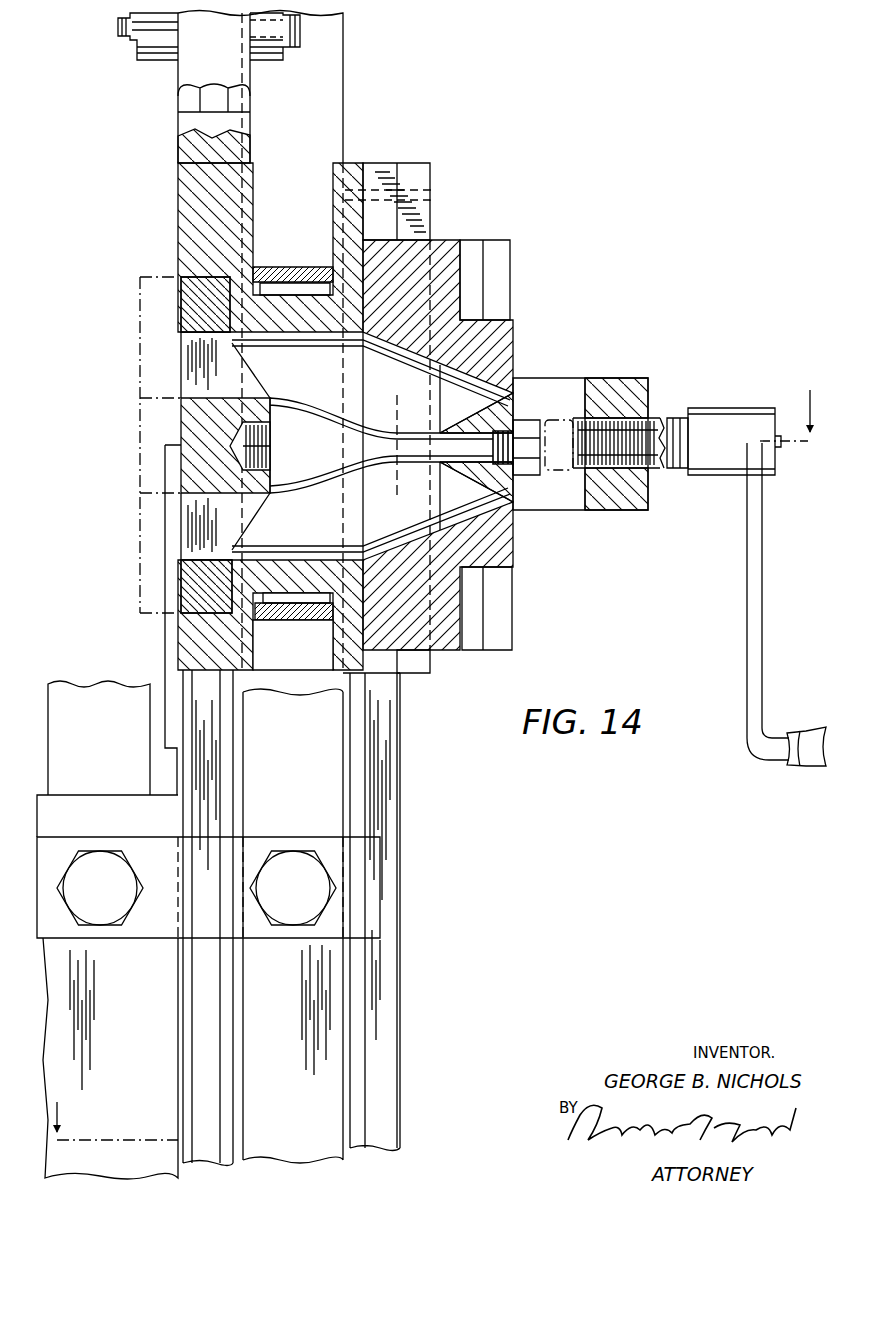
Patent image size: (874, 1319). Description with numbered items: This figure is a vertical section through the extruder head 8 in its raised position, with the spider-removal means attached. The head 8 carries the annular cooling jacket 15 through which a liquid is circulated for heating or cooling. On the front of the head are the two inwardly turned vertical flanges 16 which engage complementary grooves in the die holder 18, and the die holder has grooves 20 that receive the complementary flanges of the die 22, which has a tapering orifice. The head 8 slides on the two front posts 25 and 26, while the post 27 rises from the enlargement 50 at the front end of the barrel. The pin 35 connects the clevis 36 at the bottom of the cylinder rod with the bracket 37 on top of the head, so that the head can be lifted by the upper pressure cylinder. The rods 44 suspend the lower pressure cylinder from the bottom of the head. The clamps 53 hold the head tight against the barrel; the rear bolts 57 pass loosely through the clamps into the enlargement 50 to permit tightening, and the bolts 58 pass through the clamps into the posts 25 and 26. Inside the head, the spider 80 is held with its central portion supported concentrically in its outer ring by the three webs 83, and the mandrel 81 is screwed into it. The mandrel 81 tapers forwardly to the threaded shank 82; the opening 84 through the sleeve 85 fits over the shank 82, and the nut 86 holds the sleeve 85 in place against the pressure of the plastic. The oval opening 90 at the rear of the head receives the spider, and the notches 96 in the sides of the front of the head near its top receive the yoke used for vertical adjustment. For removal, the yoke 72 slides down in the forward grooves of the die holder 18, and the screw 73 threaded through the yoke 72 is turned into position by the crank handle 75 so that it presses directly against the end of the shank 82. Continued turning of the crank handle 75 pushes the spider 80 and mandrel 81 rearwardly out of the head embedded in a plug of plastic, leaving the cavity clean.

The extruder head 8 is at (372, 151).
The annular cooling jacket 15 is at (315, 625).
The vertical flanges 16 is at (420, 172).
The die holder 18 is at (448, 248).
The grooves 20 is at (472, 286).
The die 22 is at (517, 560).
The post 25 is at (350, 772).
The post 26 is at (325, 77).
The post 27 is at (100, 690).
The pin 35 is at (300, 30).
The clevis 36 is at (145, 58).
The bracket 37 is at (180, 118).
The rods 44 is at (185, 690).
The enlargement 50 is at (118, 806).
The clamps 53 is at (380, 932).
The rear bolts 57 is at (105, 916).
The bolts 58 is at (292, 856).
The yoke 72 is at (632, 510).
The screw 73 is at (575, 418).
The crank handle 75 is at (748, 645).
The spider 80 is at (178, 284).
The mandrel 81 is at (324, 487).
The shank 82 is at (417, 462).
The webs 83 is at (185, 358).
The opening 84 is at (448, 436).
The sleeve 85 is at (517, 490).
The nut 86 is at (522, 421).
The opening 90 is at (181, 612).
The notches 96 is at (430, 198).